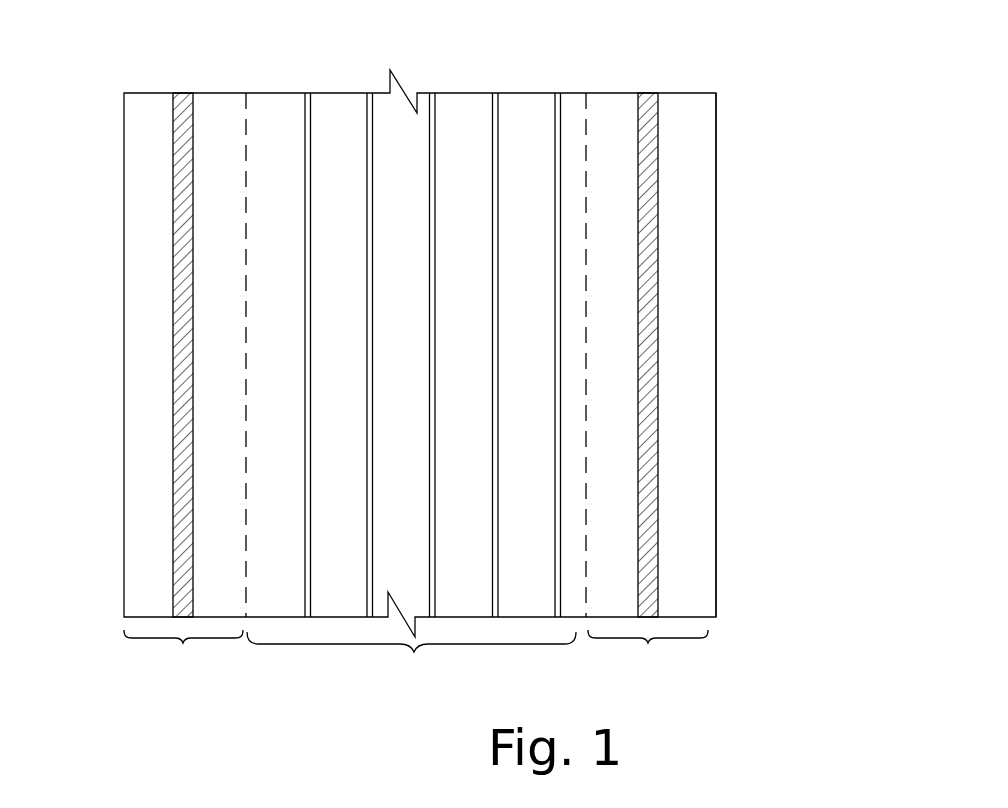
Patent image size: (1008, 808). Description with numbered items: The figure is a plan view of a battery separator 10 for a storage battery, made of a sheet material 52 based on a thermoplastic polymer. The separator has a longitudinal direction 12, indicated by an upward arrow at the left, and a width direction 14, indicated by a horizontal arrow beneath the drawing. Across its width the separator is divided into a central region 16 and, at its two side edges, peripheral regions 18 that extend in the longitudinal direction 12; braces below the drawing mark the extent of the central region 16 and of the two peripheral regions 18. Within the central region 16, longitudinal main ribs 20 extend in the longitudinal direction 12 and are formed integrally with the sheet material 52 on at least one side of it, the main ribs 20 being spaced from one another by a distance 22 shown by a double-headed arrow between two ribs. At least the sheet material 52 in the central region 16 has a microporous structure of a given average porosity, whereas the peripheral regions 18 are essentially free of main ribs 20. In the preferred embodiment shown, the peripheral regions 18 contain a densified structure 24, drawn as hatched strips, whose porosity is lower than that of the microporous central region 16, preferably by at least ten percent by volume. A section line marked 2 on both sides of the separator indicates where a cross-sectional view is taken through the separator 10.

The section line 2- 2 is at (105, 470).
The battery separator 10 is at (767, 232).
The longitudinal direction 12 is at (46, 220).
The width direction 14 is at (273, 718).
The central region 16 is at (411, 658).
The peripheral regions 18 is at (416, 387).
The longitudinal main ribs 20 is at (311, 100).
The distance 22 is at (368, 245).
The densified structure 24 is at (183, 93).
The sheet material 52 is at (717, 300).